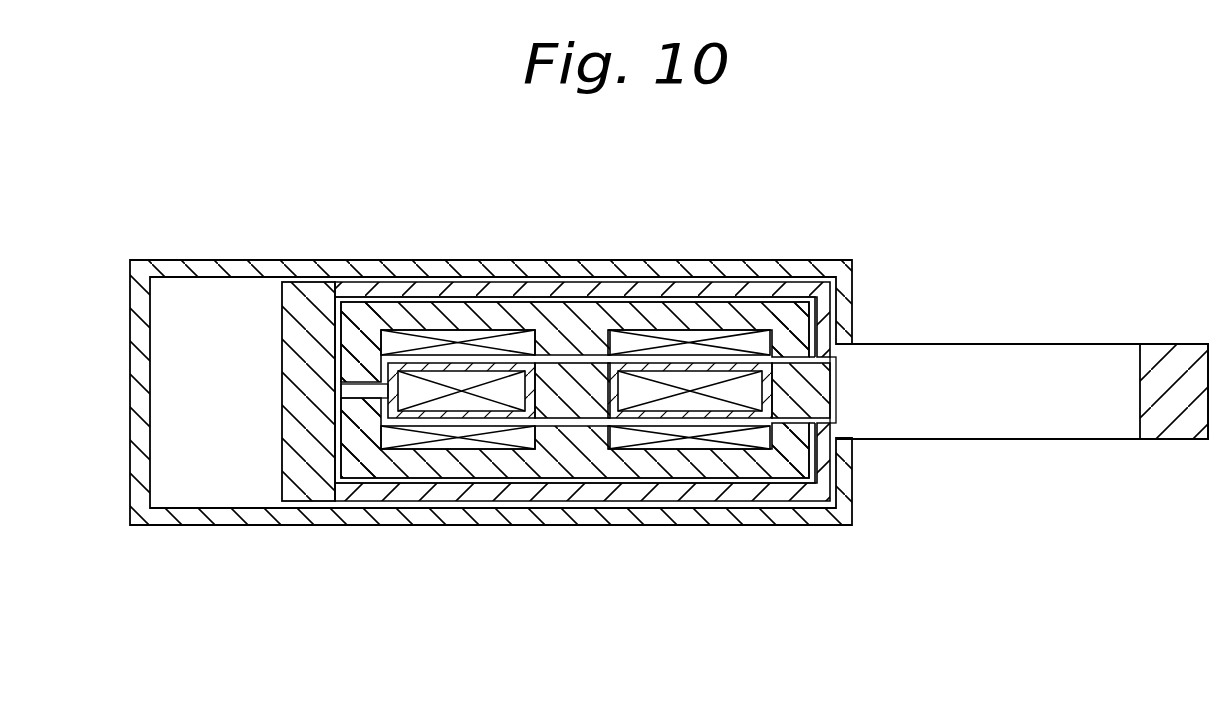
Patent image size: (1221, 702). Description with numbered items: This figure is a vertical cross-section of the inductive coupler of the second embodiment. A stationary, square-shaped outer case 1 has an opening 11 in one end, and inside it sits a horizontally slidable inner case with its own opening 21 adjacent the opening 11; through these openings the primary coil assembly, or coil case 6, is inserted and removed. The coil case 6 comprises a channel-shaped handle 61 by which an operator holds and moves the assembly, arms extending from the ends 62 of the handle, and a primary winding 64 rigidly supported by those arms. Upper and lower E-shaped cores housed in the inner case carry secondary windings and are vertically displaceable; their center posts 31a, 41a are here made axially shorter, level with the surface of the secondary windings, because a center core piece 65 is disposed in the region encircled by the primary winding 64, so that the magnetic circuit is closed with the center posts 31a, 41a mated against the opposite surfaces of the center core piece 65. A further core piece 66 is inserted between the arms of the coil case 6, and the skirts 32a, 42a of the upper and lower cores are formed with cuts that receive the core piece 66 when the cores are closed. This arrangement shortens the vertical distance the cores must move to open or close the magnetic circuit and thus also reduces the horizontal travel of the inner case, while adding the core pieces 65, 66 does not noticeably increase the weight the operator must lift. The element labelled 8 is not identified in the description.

The outer case 1 is at (850, 268).
The coil case 6 is at (1048, 344).
The connecting plate 8 is at (362, 396).
The opening 11 is at (853, 442).
The opening 21 is at (834, 510).
The center post 31a is at (570, 340).
The skirt 32a is at (362, 350).
The center post 41a is at (578, 443).
The skirt 42a is at (372, 418).
The handle 61 is at (1167, 417).
The ends of the handle 62 is at (832, 357).
The primary winding 64 is at (677, 410).
The center core piece 65 is at (552, 412).
The core piece 66 is at (788, 403).